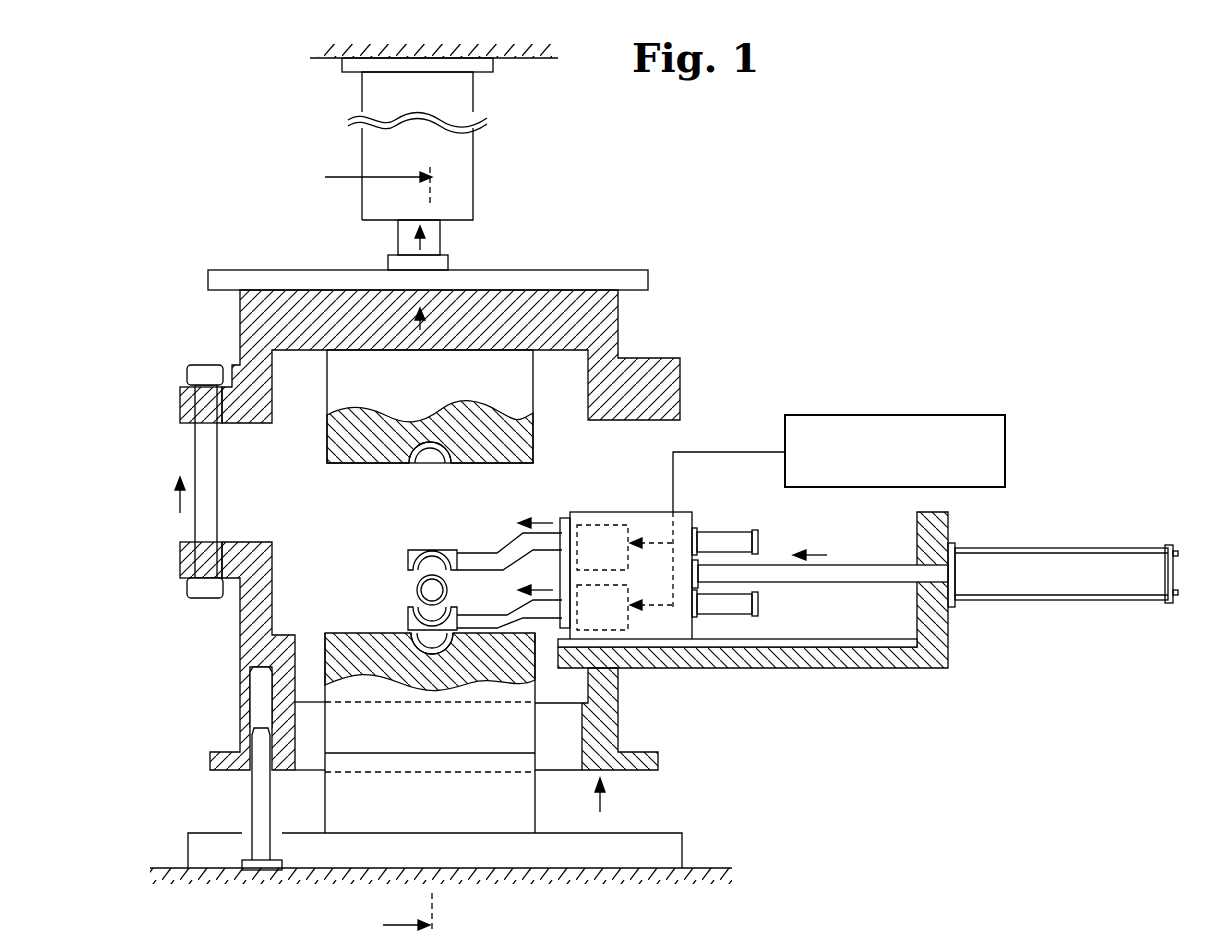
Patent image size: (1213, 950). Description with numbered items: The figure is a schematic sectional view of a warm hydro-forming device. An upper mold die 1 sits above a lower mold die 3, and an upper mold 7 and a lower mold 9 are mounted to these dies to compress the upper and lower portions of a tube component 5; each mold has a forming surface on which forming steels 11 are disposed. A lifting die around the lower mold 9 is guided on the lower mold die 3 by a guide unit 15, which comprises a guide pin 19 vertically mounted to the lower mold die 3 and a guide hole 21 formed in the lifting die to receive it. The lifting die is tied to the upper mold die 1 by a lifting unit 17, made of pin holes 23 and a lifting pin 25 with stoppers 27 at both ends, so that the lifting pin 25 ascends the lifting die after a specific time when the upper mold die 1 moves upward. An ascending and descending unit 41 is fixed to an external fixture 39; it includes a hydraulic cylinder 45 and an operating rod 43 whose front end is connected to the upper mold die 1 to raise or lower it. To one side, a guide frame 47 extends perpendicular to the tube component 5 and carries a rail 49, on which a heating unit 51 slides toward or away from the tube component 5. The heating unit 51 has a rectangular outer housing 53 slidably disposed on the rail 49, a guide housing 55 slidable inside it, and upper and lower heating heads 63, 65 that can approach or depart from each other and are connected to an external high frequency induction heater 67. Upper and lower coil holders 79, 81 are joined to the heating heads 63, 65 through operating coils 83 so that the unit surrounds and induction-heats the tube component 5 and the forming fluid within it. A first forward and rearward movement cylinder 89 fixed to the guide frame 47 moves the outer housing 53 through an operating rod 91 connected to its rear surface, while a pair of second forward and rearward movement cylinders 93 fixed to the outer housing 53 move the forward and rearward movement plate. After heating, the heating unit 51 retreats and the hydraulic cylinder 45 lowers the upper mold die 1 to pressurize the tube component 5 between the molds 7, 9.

The upper mold die 1 is at (618, 305).
The lower mold die 3 is at (660, 833).
The tube component 5 is at (400, 587).
The upper mold 7 is at (331, 463).
The lower mold 9 is at (338, 633).
The forming steels 11 is at (430, 463).
The guide unit 15 is at (383, 706).
The lifting unit 17 is at (136, 483).
The guide pin 19 is at (218, 799).
The guide hole 21 is at (252, 705).
The pin holes 23 is at (200, 425).
The lifting pin 25 is at (200, 462).
The stoppers 27 is at (197, 365).
The external fixture 39 is at (512, 60).
The ascending and descending unit 41 is at (437, 171).
The operating rod 43 is at (458, 245).
The hydraulic cylinder 45 is at (473, 157).
The guide frame 47 is at (866, 668).
The rail 49 is at (850, 639).
The heating unit 51 is at (857, 543).
The outer housing 53 is at (640, 512).
The guide housing 55 is at (563, 518).
The upper heating head 63 is at (598, 525).
The lower heating head 65 is at (630, 618).
The high frequency induction heater 67 is at (908, 415).
The upper coil holder 79 is at (435, 550).
The lower coil holder 81 is at (408, 617).
The operating coils 83 is at (476, 553).
The first forward and rearward movement cylinder 89 is at (1060, 548).
The operating rod 91 is at (858, 565).
The second forward and rearward movement cylinders 93 is at (717, 531).